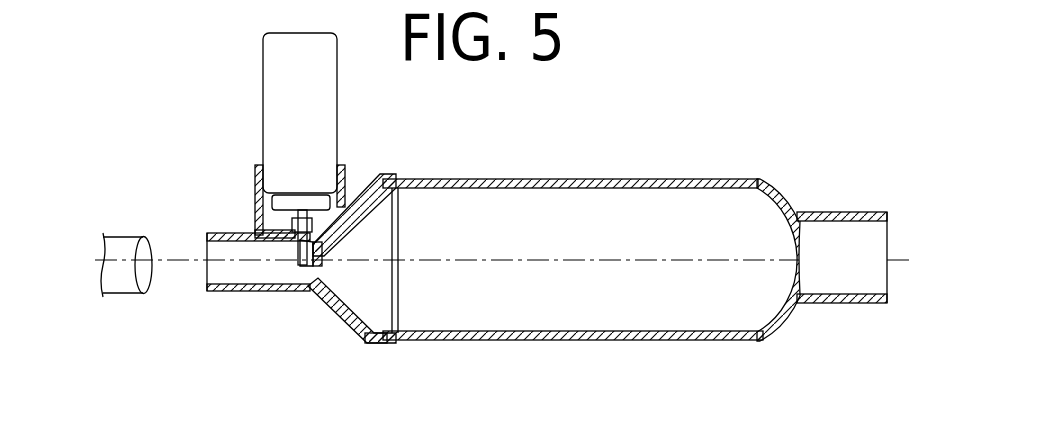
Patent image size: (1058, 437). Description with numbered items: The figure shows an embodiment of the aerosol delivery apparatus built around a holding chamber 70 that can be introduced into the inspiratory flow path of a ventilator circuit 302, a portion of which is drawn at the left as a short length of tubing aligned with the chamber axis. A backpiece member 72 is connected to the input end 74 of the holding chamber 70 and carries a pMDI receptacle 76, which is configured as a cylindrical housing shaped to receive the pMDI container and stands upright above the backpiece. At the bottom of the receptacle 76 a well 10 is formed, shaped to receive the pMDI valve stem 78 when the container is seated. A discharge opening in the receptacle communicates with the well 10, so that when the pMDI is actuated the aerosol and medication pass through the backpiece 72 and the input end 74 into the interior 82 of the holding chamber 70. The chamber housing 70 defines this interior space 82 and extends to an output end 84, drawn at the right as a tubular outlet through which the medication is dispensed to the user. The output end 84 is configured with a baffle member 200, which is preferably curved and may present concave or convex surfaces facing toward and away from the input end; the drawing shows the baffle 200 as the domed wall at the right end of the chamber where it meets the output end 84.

The ventilator circuit 302 is at (135, 237).
The backpiece member 72 is at (258, 290).
The pMDI receptacle 76 is at (257, 200).
The pMDI valve stem 78 is at (297, 253).
The well 10 is at (317, 245).
The holding chamber 70 is at (501, 179).
The interior space 82 is at (578, 230).
The input end 74 is at (383, 343).
The baffle member 200 is at (798, 268).
The output end 84 is at (786, 189).